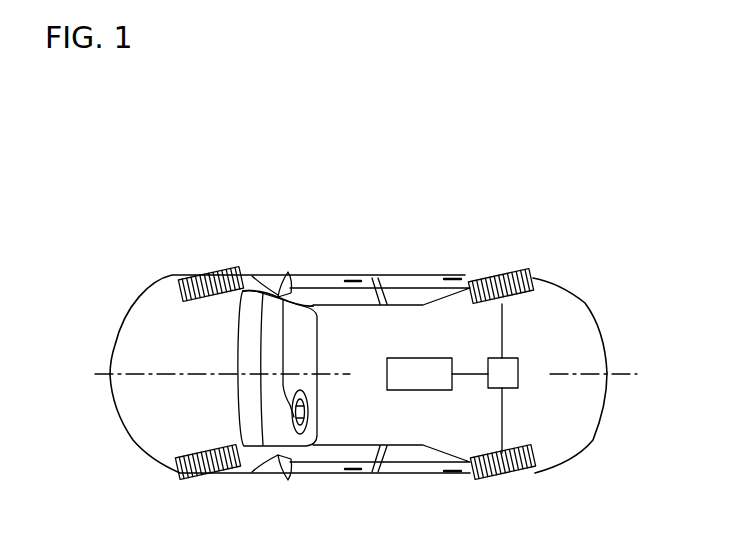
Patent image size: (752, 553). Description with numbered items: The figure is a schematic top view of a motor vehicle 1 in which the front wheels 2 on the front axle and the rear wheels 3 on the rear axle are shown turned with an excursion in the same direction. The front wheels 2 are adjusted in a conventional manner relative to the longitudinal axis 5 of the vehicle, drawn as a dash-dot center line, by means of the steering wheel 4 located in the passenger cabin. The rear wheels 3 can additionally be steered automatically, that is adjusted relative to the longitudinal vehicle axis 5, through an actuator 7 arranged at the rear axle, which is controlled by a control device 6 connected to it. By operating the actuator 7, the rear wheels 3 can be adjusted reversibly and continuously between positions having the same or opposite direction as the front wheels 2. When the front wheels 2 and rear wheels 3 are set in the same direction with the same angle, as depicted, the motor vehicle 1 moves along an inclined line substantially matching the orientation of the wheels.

The motor vehicle 1 is at (203, 182).
The front wheels 2 is at (189, 268).
The rear wheels 3 is at (518, 268).
The steering wheel 4 is at (303, 435).
The longitudinal axis 5 is at (637, 374).
The control device 6 is at (413, 391).
The actuator 7 is at (520, 367).